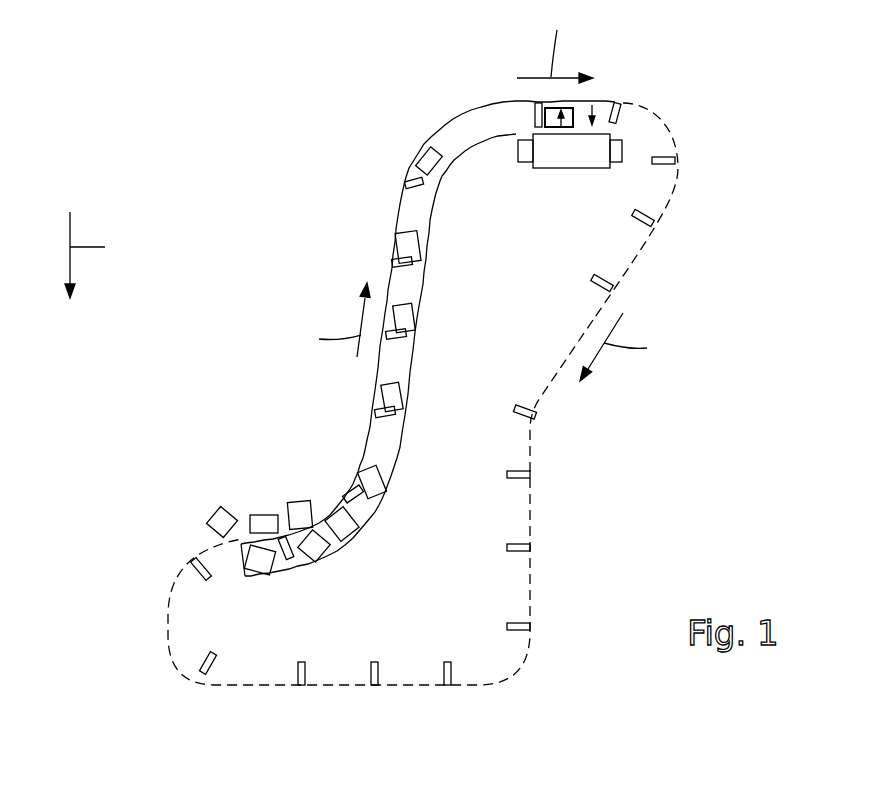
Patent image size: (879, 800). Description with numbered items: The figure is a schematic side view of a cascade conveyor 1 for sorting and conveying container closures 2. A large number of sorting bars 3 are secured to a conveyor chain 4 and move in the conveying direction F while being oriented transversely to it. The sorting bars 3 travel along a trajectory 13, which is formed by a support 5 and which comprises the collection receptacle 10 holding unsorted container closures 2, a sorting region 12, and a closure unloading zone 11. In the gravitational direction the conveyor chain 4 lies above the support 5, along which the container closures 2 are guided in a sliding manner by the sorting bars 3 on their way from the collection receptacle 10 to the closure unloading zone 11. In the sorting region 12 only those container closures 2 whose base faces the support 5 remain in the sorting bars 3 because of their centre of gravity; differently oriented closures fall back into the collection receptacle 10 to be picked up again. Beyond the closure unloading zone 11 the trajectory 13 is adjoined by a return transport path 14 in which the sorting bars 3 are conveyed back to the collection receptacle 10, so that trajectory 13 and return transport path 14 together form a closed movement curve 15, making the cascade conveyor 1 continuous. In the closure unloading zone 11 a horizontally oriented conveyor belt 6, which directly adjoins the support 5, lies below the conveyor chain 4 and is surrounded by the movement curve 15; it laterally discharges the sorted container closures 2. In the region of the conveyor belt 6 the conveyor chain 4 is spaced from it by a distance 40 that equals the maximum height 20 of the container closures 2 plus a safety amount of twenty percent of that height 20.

The cascade conveyor 1 is at (212, 103).
The container closures 2 is at (430, 157).
The sorting bars 3 is at (406, 183).
The conveyor chain 4 is at (398, 210).
The support 5 is at (426, 283).
The conveyor belt 6 is at (563, 170).
The collection receptacle 10 is at (240, 459).
The closure unloading zone 11 is at (679, 71).
The sorting region 12 is at (207, 250).
The trajectory 13 is at (372, 437).
The return transport path 14 is at (532, 521).
The closed movement curve 15 is at (717, 233).
The height of the container closures 20 is at (545, 126).
The distance 40 is at (590, 121).